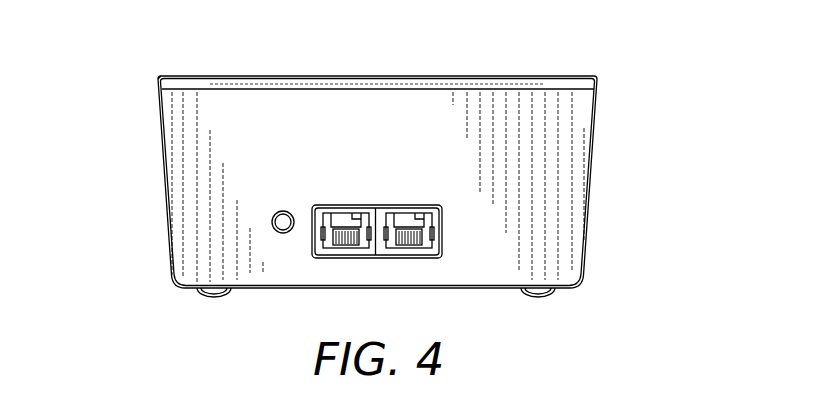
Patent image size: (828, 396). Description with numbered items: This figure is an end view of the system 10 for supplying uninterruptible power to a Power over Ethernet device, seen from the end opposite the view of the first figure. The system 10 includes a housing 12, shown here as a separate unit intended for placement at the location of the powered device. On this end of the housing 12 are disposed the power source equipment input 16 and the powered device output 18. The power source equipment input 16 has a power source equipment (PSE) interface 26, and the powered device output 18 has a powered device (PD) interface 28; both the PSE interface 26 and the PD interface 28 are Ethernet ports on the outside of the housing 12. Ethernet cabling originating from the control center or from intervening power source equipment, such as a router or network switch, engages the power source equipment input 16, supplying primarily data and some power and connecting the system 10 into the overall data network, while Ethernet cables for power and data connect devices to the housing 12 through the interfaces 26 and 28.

The system 10 is at (135, 77).
The housing 12 is at (593, 173).
The power source equipment input 16 is at (422, 245).
The powered device output 18 is at (330, 245).
The power source equipment (PSE) interface 26 is at (402, 230).
The powered device (PD) interface 28 is at (335, 232).